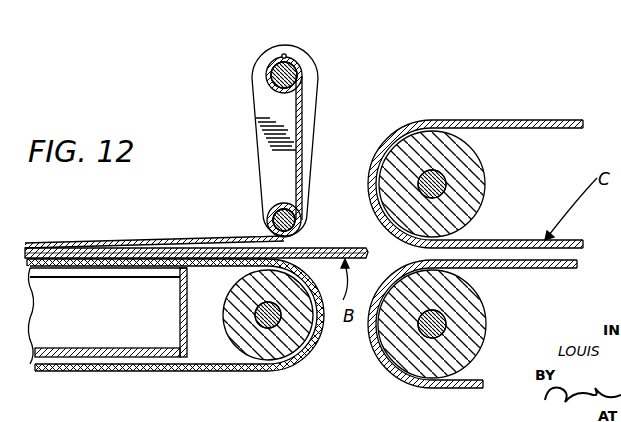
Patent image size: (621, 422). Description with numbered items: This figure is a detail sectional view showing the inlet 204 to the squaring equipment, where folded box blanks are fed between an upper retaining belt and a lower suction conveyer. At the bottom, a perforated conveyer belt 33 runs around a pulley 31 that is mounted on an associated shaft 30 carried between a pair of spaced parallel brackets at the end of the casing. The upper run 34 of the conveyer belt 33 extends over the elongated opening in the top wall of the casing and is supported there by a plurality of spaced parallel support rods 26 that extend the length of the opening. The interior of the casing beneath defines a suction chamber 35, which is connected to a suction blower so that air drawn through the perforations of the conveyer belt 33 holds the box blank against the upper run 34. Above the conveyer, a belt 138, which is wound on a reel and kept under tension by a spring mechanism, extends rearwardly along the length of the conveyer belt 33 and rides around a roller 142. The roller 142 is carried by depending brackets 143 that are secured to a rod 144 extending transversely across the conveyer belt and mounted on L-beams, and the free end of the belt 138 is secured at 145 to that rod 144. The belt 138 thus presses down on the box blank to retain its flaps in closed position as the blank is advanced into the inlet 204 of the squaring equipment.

The free end securement 145 is at (285, 55).
The rod 144 is at (270, 75).
The depending brackets 143 is at (262, 146).
The roller 142 is at (271, 218).
The inlet 204 is at (317, 236).
The belt 138 is at (187, 238).
The support rods 26 is at (60, 272).
The upper run 34 is at (186, 282).
The suction chamber 35 is at (86, 340).
The conveyer belt 33 is at (136, 374).
The pulley 31 is at (251, 347).
The shaft 30 is at (279, 321).